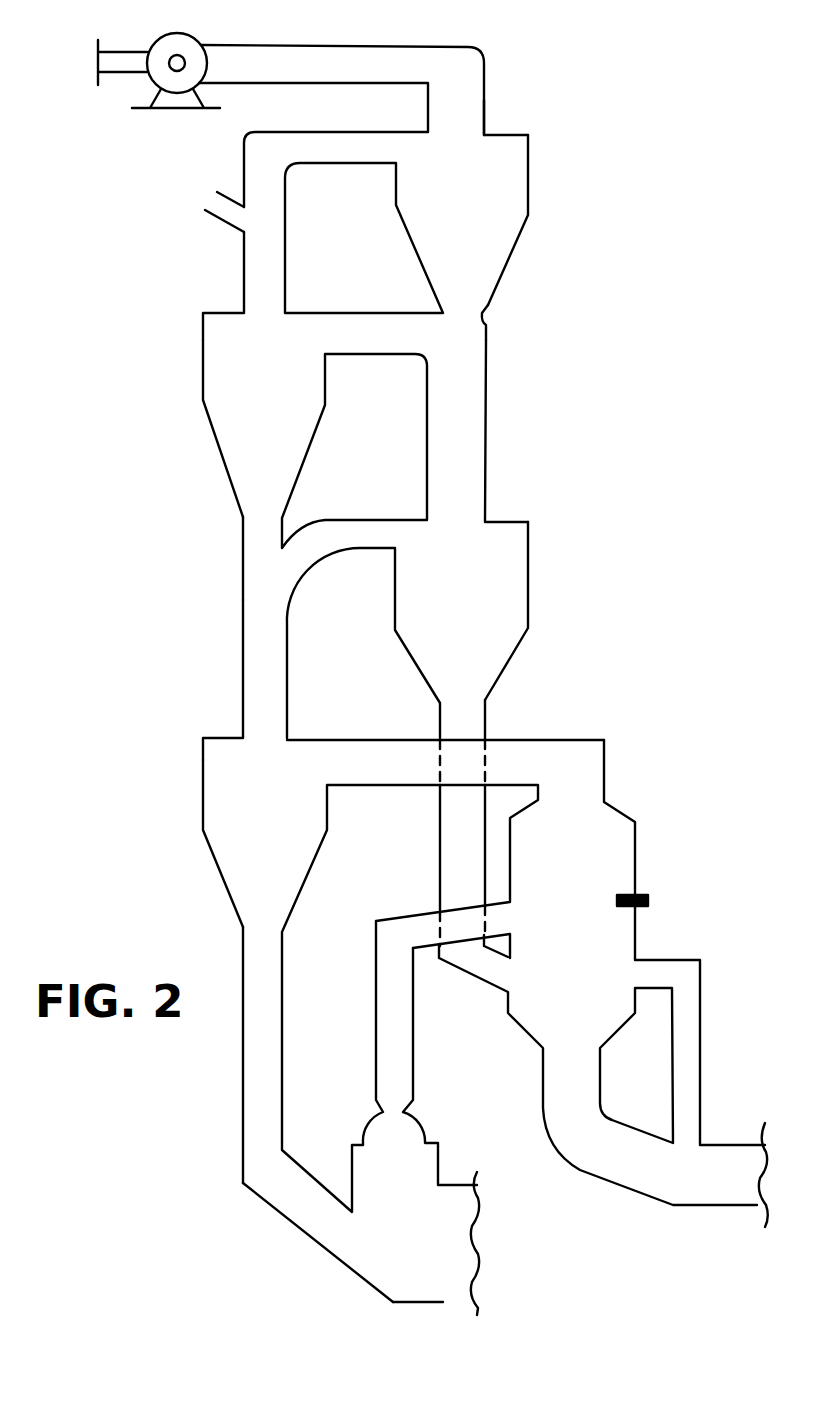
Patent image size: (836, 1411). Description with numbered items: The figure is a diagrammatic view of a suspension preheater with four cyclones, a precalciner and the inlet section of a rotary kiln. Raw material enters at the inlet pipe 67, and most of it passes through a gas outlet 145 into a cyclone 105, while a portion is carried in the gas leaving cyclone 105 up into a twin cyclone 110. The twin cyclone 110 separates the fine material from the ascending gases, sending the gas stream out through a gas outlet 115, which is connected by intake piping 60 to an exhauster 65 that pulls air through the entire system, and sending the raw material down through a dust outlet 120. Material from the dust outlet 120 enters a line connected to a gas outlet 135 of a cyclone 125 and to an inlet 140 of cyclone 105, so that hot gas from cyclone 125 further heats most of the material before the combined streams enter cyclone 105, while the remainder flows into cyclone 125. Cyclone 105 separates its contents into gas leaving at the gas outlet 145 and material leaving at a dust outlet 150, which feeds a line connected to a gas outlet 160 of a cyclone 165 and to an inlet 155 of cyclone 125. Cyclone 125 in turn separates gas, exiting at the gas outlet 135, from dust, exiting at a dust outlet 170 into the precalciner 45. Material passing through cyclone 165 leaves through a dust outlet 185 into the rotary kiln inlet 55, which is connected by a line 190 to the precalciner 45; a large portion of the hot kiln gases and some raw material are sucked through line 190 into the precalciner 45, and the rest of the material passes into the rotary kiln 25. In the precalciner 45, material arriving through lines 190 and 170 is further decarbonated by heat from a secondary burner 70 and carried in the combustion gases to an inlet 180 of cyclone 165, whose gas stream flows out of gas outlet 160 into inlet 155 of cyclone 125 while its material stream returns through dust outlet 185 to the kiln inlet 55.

The rotary kiln 25 is at (405, 1305).
The precalciner 45 is at (637, 848).
The rotary kiln inlet 55 is at (338, 1260).
The intake piping 60 is at (348, 47).
The exhauster 65 is at (152, 45).
The inlet pipe 67 is at (212, 200).
The secondary burner 70 is at (648, 902).
The cyclone 105 is at (203, 395).
The twin cyclone 110 is at (530, 172).
The gas outlet 115 is at (486, 100).
The dust outlet 120 is at (490, 305).
The cyclone 125 is at (530, 548).
The gas outlet 135 is at (487, 418).
The inlet 140 is at (340, 313).
The gas outlet 145 is at (244, 288).
The dust outlet 150 is at (243, 535).
The inlet 155 is at (365, 520).
The gas outlet 160 is at (243, 656).
The cyclone 165 is at (200, 807).
The dust outlet 170 is at (487, 722).
The inlet 180 is at (358, 738).
The dust outlet 185 is at (242, 928).
The line 190 is at (414, 1052).